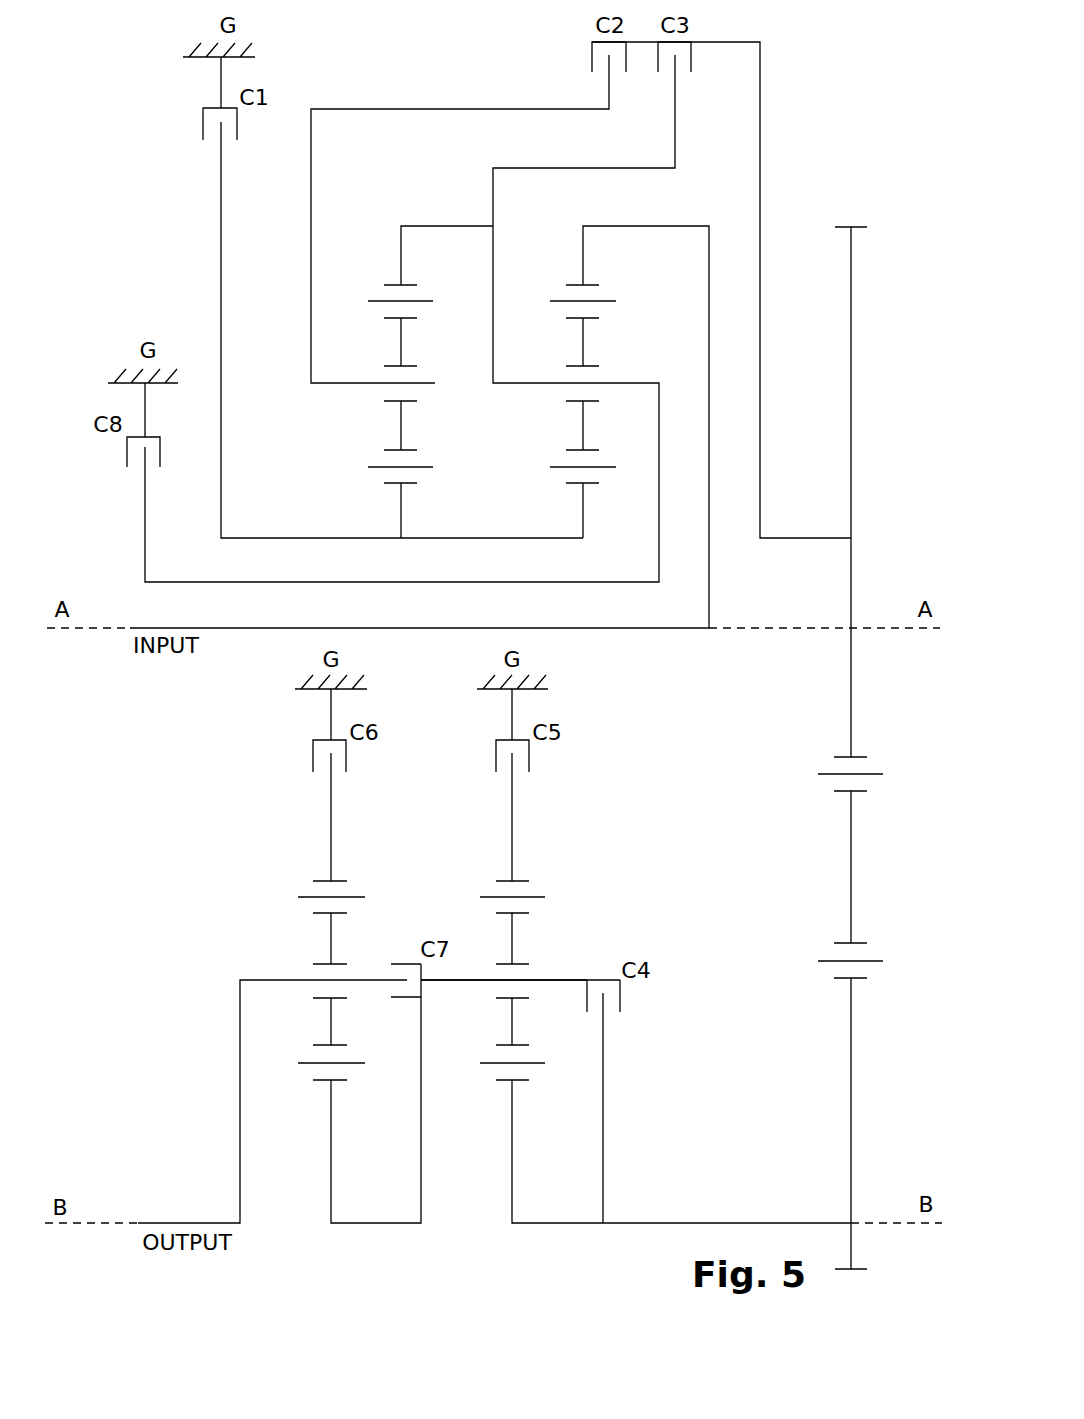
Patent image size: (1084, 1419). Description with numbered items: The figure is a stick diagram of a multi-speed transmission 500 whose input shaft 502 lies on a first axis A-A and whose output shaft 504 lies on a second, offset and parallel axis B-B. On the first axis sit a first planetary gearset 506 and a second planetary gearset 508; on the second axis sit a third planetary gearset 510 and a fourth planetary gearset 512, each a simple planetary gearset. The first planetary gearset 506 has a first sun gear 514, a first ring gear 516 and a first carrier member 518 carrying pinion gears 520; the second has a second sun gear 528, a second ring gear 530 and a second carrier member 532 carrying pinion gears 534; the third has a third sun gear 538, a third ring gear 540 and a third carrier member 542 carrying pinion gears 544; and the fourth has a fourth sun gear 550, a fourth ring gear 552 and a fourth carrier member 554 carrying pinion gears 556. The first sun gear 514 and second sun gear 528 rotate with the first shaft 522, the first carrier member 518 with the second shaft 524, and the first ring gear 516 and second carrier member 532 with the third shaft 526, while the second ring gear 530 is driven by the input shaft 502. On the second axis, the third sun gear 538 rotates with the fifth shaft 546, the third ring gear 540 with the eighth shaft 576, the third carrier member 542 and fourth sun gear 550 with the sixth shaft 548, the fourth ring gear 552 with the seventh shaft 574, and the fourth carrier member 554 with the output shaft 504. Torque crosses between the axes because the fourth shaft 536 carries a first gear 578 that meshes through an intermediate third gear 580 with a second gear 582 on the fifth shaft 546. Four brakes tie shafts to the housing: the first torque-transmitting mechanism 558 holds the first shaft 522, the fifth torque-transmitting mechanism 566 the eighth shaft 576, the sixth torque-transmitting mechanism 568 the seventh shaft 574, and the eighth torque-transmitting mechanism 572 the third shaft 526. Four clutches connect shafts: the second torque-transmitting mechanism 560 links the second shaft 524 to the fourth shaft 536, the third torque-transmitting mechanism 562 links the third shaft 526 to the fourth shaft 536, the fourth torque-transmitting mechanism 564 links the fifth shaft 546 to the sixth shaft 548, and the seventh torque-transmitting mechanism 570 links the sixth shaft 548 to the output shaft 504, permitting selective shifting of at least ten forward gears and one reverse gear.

The multi-speed transmission 500 is at (858, 125).
The input shaft 502 is at (183, 627).
The output shaft 504 is at (162, 1223).
The first planetary gearset 506 is at (403, 548).
The second planetary gearset 508 is at (584, 548).
The third planetary gearset 510 is at (512, 1232).
The fourth planetary gearset 512 is at (330, 1232).
The first sun gear 514 is at (375, 477).
The first ring gear 516 is at (393, 277).
The first carrier member 518 is at (377, 393).
The pinion gears 520 is at (413, 366).
The first shaft 522 is at (220, 270).
The second shaft 524 is at (365, 108).
The third shaft 526 is at (441, 226).
The second sun gear 528 is at (555, 478).
The second ring gear 530 is at (575, 277).
The second carrier member 532 is at (560, 395).
The pinion gears 534 is at (595, 366).
The fourth shaft 536 is at (760, 178).
The third sun gear 538 is at (520, 1088).
The third ring gear 540 is at (525, 870).
The third carrier member 542 is at (525, 950).
The pinion gears 544 is at (523, 998).
The fifth shaft 546 is at (692, 1223).
The sixth shaft 548 is at (457, 981).
The fourth sun gear 550 is at (315, 1088).
The fourth ring gear 552 is at (340, 870).
The fourth carrier member 554 is at (343, 958).
The pinion gears 556 is at (323, 963).
The first torque-transmitting mechanism 558 is at (203, 123).
The second torque-transmitting mechanism 560 is at (592, 57).
The third torque-transmitting mechanism 562 is at (691, 57).
The fourth torque-transmitting mechanism 564 is at (620, 995).
The fifth torque-transmitting mechanism 566 is at (496, 757).
The sixth torque-transmitting mechanism 568 is at (313, 757).
The seventh torque-transmitting mechanism 570 is at (405, 997).
The eighth torque-transmitting mechanism 572 is at (127, 452).
The seventh shaft 574 is at (331, 818).
The eighth shaft 576 is at (512, 805).
The first gear 578 is at (851, 340).
The third gear 580 is at (851, 868).
The second gear 582 is at (851, 1073).